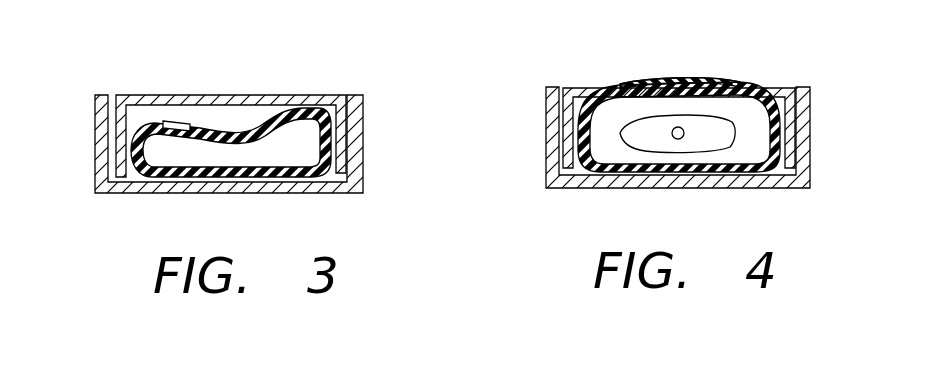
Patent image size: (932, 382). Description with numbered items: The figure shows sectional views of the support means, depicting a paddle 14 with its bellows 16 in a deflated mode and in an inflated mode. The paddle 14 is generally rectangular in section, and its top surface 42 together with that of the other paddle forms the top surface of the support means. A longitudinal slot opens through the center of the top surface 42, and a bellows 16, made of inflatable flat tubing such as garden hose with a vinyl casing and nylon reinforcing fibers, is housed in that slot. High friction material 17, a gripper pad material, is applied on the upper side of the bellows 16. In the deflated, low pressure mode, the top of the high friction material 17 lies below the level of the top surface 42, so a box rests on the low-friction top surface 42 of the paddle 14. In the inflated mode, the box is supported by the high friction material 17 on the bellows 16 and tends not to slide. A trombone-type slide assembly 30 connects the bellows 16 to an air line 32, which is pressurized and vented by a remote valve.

In FIG. 3, the paddle 14 is at (72, 145).
In FIG. 4, the paddle 14 is at (832, 149).
In FIG. 3, the bellows 16 is at (297, 112).
In FIG. 4, the bellows 16 is at (737, 85).
In FIG. 3, the high friction material 17 is at (172, 124).
In FIG. 4, the high friction material 17 is at (626, 84).
In FIG. 4, the slide assembly 30 is at (705, 137).
In FIG. 4, the air line 32 is at (678, 126).
In FIG. 3, the top surface 42 is at (150, 99).
In FIG. 4, the top surface 42 is at (770, 87).